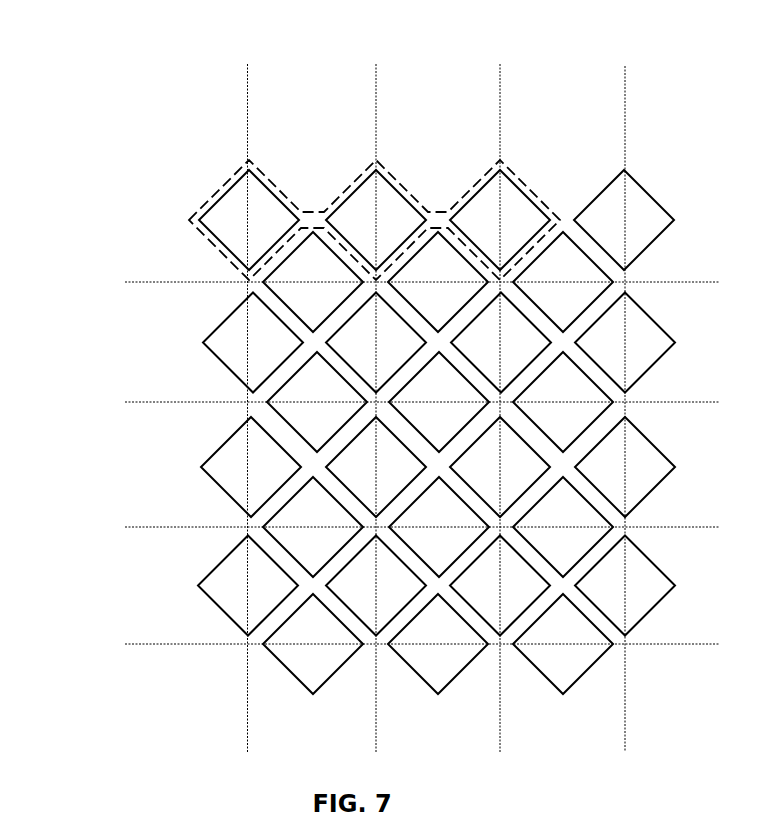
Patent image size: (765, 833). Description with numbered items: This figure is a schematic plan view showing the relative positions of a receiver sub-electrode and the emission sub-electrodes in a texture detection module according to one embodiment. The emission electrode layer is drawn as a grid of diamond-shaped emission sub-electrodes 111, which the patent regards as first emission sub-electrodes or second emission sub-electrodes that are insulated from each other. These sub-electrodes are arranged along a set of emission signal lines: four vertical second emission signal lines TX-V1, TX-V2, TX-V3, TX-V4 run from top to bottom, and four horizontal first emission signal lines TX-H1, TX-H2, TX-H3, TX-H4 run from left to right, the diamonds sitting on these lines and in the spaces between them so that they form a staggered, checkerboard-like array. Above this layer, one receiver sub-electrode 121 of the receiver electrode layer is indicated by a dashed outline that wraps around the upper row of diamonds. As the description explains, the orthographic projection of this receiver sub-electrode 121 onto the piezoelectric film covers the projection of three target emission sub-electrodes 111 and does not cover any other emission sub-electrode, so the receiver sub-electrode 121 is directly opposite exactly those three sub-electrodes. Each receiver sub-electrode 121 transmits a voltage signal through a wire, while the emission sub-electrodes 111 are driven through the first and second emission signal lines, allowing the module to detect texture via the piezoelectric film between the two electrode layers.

The emission electrode 111 is at (237, 237).
The receiver sub-electrode 121 is at (217, 187).
The second emission signal line TX-V1 is at (243, 387).
The second emission signal line TX-V2 is at (375, 387).
The second emission signal line TX-V3 is at (497, 387).
The second emission signal line TX-V4 is at (625, 387).
The first emission signal line TX-H1 is at (368, 282).
The first emission signal line TX-H2 is at (368, 404).
The first emission signal line TX-H3 is at (368, 527).
The first emission signal line TX-H4 is at (368, 644).